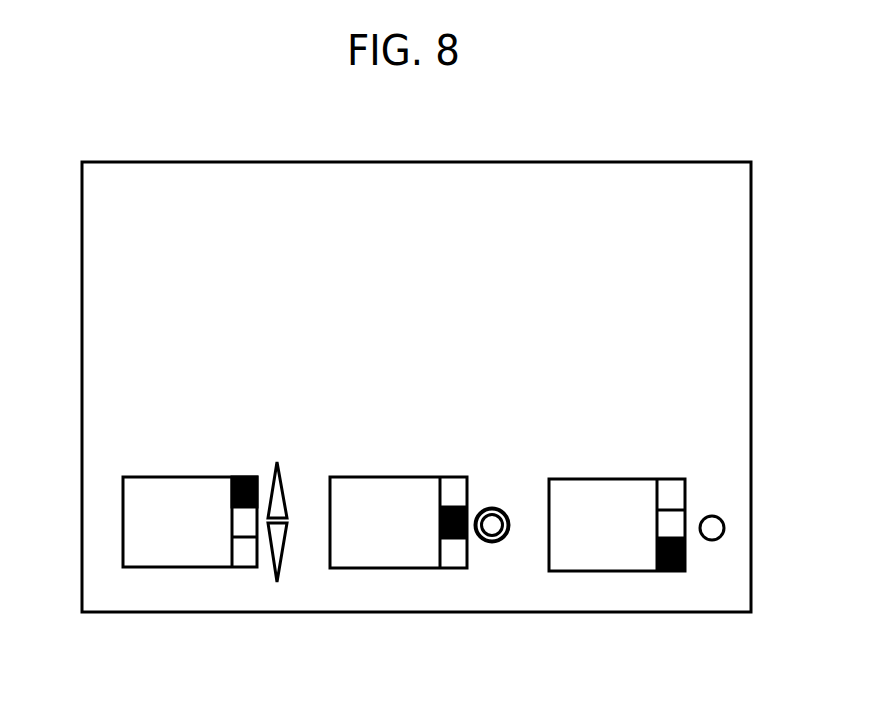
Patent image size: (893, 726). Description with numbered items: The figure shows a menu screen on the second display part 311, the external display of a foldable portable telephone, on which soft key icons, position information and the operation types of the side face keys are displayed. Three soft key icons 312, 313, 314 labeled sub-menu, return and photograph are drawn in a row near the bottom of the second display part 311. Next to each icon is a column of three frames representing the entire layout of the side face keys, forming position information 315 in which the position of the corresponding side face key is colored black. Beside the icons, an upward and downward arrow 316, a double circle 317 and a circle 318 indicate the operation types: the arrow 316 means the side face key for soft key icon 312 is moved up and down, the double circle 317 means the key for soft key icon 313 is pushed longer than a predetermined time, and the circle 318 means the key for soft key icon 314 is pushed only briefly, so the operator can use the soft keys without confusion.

The second display part 311 is at (309, 162).
The soft key icon 312 is at (138, 475).
The soft key icon 313 is at (358, 477).
The soft key icon 314 is at (592, 478).
The position information 315 is at (247, 475).
The upward and downward arrow 316 is at (287, 555).
The double circle 317 is at (492, 543).
The circle 318 is at (710, 540).